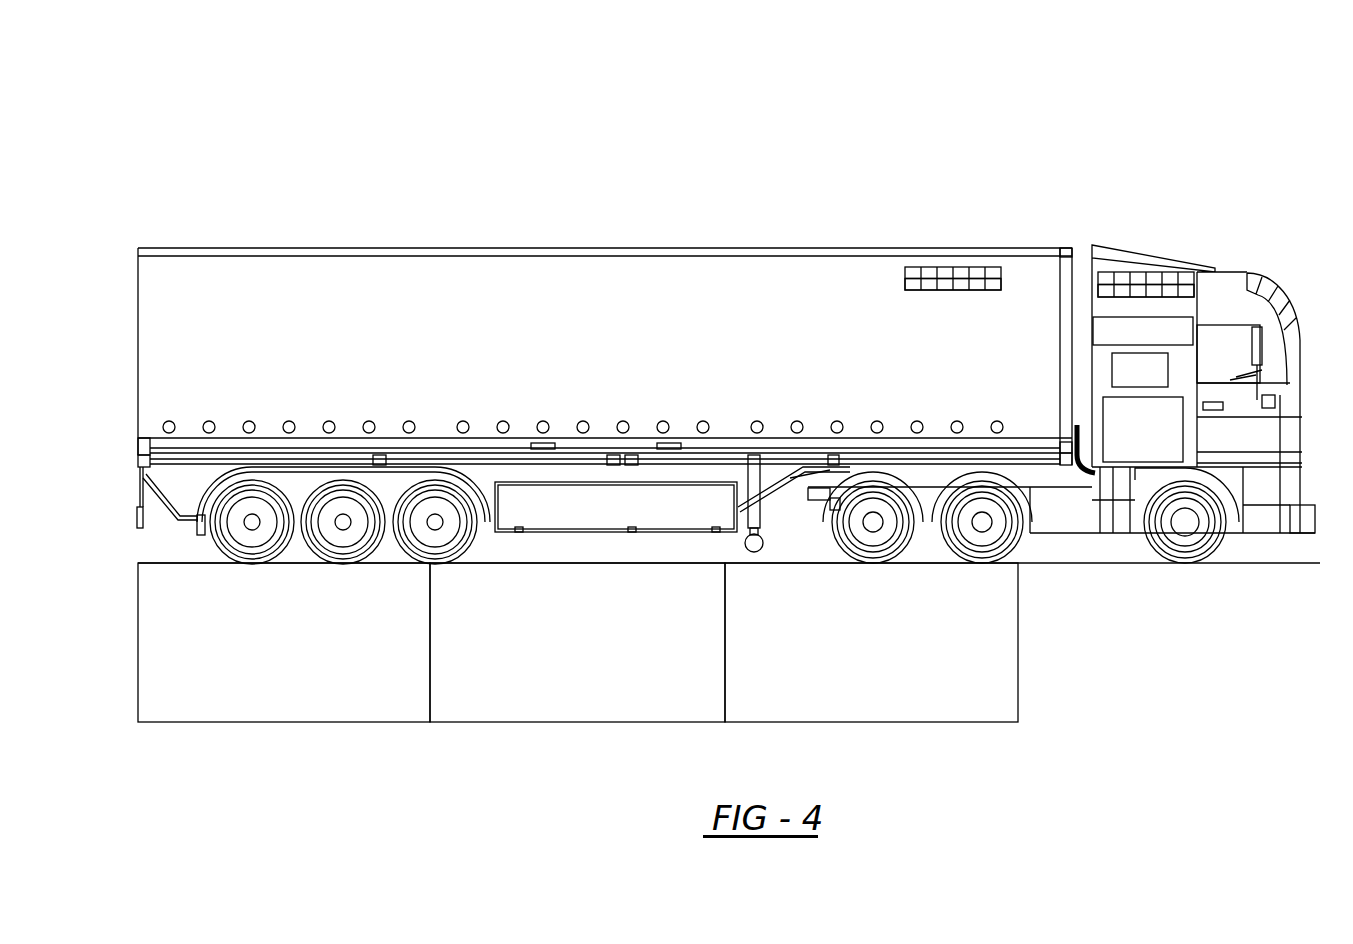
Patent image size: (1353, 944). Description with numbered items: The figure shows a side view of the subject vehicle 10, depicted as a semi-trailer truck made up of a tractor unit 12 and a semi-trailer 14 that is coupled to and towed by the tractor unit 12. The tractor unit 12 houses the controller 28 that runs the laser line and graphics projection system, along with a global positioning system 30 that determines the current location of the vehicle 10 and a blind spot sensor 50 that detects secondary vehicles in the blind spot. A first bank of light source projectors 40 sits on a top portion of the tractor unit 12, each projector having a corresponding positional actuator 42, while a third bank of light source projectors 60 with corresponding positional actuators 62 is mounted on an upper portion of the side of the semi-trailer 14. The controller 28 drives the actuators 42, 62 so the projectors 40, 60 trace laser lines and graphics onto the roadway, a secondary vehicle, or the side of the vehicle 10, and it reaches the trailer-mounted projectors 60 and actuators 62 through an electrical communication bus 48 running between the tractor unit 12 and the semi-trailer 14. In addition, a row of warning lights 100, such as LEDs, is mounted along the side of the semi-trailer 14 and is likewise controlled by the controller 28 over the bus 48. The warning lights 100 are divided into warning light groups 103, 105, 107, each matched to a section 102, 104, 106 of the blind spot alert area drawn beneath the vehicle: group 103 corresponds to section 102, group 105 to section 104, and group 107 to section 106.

The vehicle 10 is at (1203, 158).
The tractor unit 12 is at (1135, 252).
The semi-trailer 14 is at (975, 248).
The controller 28 is at (1093, 330).
The global positioning system (GPS) 30 is at (1112, 370).
The light source projectors 40 is at (1202, 274).
The positional actuators 42 is at (1204, 290).
The electrical communication bus 48 is at (1071, 488).
The blind spot sensor 50 is at (1277, 400).
The light source projectors 60 is at (896, 268).
The positional actuators 62 is at (896, 282).
The warning lights 100 is at (748, 425).
The section of the blind spot alert area 102 is at (300, 695).
The warning light group 103 is at (420, 412).
The section of the blind spot alert area 104 is at (593, 695).
The warning light group 105 is at (715, 412).
The section of the blind spot alert area 106 is at (878, 695).
The warning light group 107 is at (1005, 412).